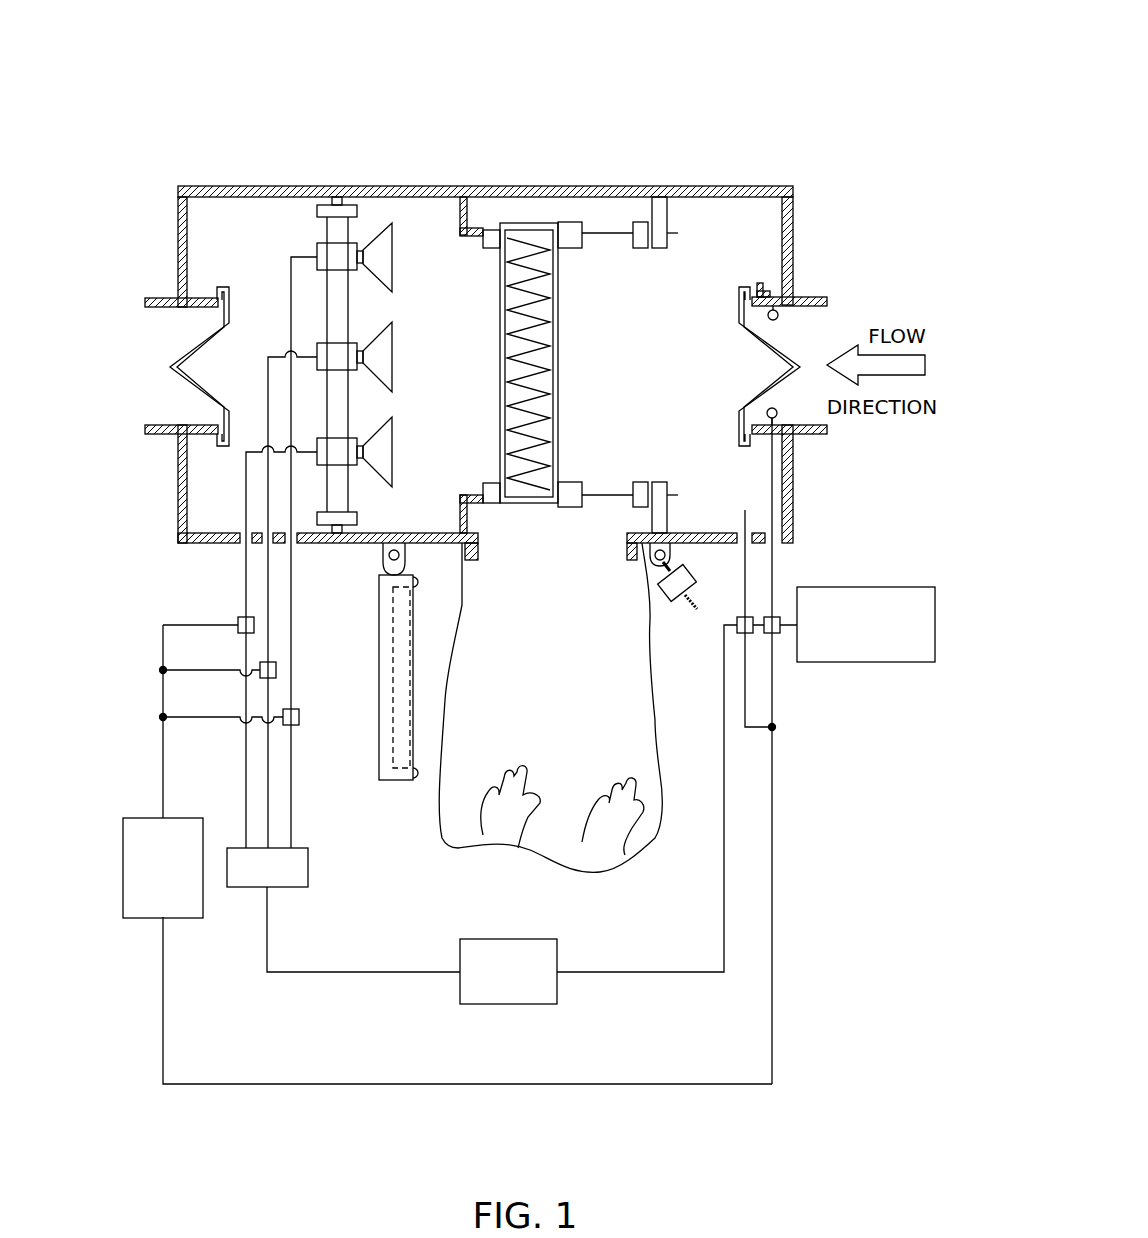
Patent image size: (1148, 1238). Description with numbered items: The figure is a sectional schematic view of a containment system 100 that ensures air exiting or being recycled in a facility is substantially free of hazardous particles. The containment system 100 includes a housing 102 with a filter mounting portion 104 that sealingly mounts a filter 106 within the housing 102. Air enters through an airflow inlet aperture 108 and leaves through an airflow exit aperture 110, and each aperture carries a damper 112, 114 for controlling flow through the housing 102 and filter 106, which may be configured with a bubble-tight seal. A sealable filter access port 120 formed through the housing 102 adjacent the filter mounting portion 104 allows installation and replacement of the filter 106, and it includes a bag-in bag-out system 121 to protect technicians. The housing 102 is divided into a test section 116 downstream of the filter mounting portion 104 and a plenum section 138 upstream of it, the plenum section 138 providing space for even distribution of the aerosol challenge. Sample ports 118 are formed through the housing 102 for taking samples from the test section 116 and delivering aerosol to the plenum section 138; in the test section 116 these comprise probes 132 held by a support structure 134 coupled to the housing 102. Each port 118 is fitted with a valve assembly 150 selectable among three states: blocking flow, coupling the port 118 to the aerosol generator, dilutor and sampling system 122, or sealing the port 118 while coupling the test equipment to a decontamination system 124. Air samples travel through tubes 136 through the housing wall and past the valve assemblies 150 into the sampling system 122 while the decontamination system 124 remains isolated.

The containment system 100 is at (746, 75).
The housing 102 is at (228, 185).
The filter mounting portion 104 is at (538, 200).
The filter 106 is at (540, 352).
The airflow inlet aperture 108 is at (815, 347).
The airflow exit aperture 110 is at (168, 380).
The damper 112 is at (783, 388).
The damper 114 is at (200, 398).
The test section 116 is at (429, 345).
The sample ports 118 is at (291, 545).
The sealable filter access port 120 is at (548, 562).
The bag-in bag-out system 121 is at (468, 769).
The aerosol generator, dilutor and sampling system 122 is at (531, 1004).
The decontamination system 124 is at (175, 917).
The probes 132 is at (408, 232).
The support structure 134 is at (330, 197).
The tubes 136 is at (235, 481).
The plenum section 138 is at (635, 301).
The valve assembly 150 is at (254, 623).